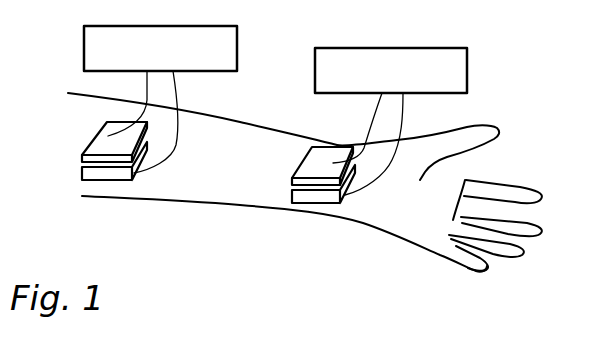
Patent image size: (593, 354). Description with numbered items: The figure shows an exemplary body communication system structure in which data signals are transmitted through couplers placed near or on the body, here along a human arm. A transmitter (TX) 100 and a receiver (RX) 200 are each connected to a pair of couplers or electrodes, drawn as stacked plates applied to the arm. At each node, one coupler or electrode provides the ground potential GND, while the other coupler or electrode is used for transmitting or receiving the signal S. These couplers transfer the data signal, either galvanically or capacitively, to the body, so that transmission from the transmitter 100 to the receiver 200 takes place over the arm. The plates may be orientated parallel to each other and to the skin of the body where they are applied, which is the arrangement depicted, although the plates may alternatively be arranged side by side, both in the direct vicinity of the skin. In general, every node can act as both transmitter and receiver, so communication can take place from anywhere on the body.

The transmitter 100 is at (132, 103).
The receiver 200 is at (410, 125).
The transmitter TX is at (67, 38).
The receiver RX is at (391, 70).
The ground potential GND is at (238, 117).
The signal S is at (282, 133).